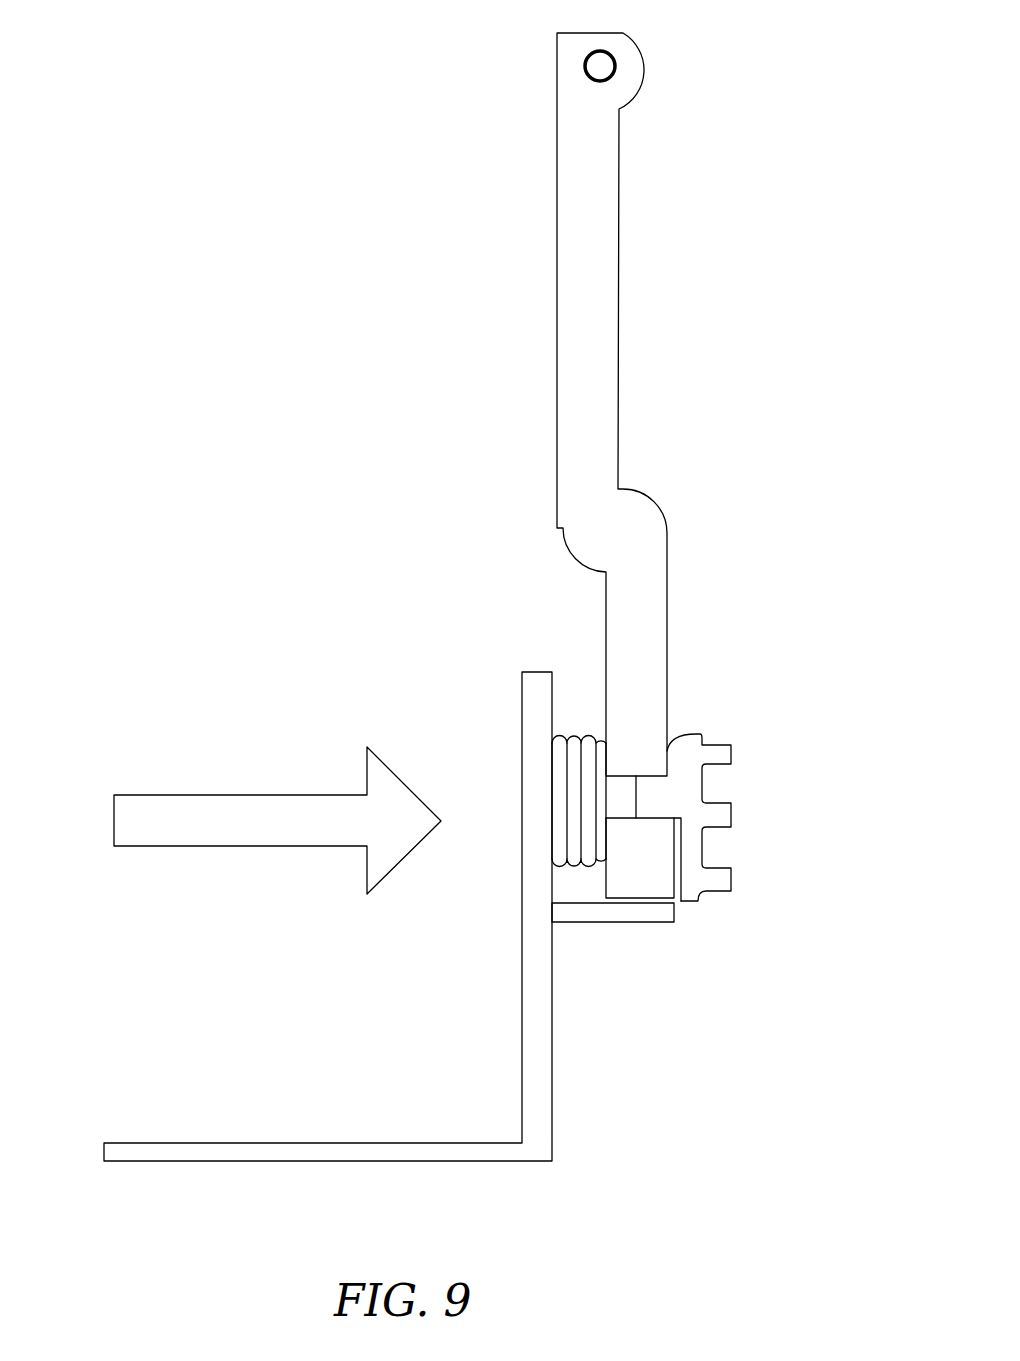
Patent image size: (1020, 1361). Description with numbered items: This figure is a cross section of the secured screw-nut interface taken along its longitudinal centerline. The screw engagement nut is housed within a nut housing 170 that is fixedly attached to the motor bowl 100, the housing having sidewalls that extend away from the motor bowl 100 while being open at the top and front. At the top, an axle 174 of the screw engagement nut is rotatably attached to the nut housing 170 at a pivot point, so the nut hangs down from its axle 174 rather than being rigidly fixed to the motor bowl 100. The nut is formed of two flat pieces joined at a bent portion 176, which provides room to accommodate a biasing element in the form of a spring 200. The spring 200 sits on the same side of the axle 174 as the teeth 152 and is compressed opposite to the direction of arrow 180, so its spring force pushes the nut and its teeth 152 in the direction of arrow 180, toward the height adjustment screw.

The motor bowl 100 is at (245, 1160).
The teeth 152 is at (728, 802).
The nut housing 170 is at (605, 921).
The axle 174 is at (600, 55).
The bent portion 176 is at (628, 512).
The arrow 180 is at (165, 794).
The spring 200 is at (583, 742).